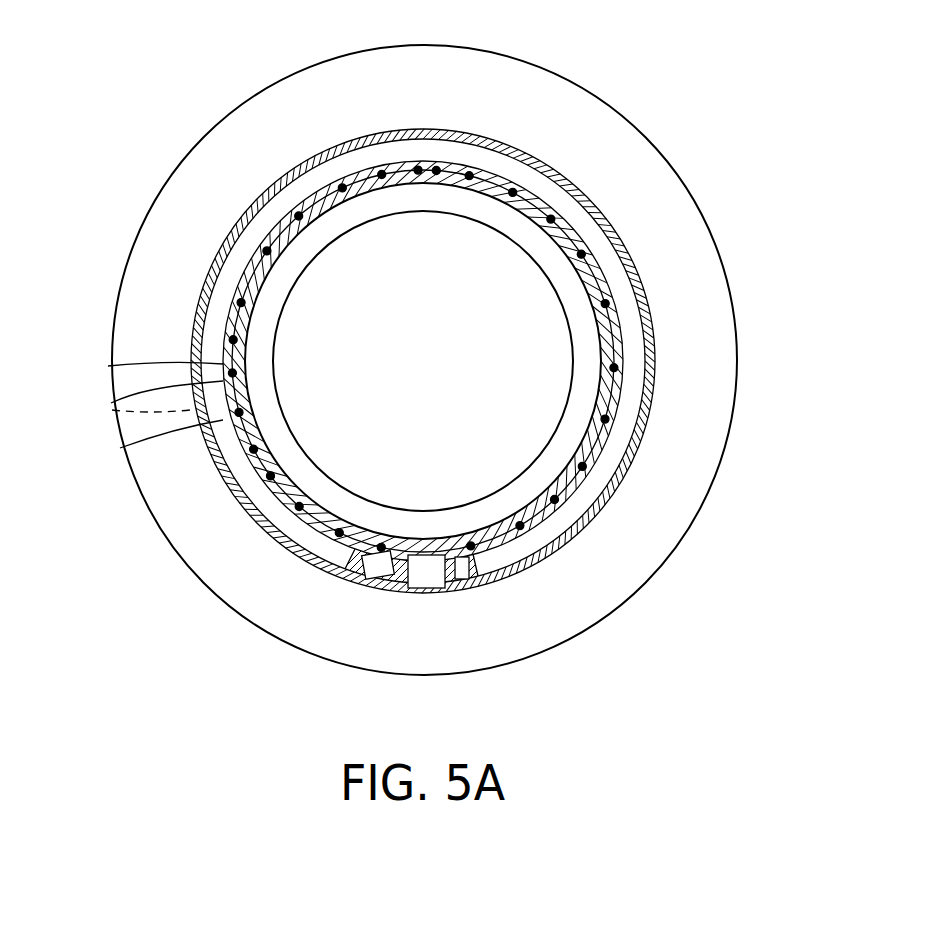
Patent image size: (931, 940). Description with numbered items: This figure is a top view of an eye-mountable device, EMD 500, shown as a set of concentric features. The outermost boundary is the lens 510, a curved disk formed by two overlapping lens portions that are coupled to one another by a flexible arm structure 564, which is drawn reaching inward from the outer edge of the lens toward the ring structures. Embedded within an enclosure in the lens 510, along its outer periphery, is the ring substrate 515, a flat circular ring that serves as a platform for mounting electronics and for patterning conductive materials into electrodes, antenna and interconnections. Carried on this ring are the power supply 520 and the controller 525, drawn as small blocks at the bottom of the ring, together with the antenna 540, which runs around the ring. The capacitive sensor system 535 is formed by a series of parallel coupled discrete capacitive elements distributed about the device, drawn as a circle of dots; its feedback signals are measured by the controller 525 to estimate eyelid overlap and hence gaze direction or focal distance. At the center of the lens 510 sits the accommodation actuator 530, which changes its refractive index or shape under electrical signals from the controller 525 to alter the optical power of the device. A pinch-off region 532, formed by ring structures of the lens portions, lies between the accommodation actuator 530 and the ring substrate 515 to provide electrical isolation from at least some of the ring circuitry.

The eye-mountable device 500 is at (426, 357).
The lens 510 is at (151, 527).
The ring substrate 515 is at (607, 507).
The power supply 520 is at (373, 565).
The controller 525 is at (423, 578).
The accommodation actuator 530 is at (383, 322).
The pinch-off region 532 is at (588, 363).
The capacitive sensor system 535 is at (600, 267).
The antenna 540 is at (547, 542).
The flexible arm structure 564 is at (148, 377).